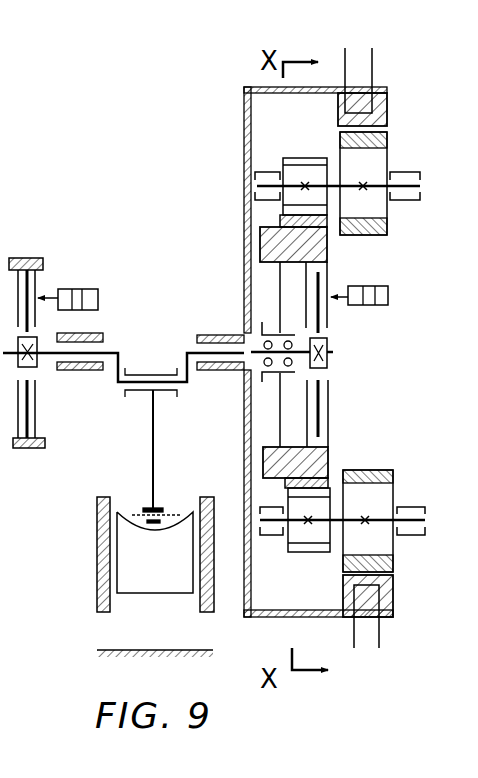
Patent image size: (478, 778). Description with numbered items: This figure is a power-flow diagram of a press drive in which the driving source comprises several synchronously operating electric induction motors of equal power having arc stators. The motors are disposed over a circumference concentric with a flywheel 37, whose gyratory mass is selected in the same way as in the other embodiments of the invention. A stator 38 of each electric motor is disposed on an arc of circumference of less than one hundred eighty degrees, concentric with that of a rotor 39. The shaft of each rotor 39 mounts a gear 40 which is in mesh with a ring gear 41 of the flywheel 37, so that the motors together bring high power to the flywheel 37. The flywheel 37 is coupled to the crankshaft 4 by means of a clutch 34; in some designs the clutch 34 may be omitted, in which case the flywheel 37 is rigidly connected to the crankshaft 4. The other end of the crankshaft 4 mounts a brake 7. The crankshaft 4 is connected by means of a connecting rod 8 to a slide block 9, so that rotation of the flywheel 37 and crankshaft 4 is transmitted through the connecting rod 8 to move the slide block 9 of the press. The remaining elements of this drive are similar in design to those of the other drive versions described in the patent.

The crankshaft 4 is at (125, 385).
The brake 7 is at (40, 286).
The connecting rod 8 is at (152, 445).
The slide block 9 is at (157, 583).
The clutch 34 is at (327, 315).
The flywheel 37 is at (270, 250).
The stator 38 is at (340, 122).
The rotor 39 is at (340, 140).
The gear 40 is at (290, 173).
The ring gear 41 is at (282, 220).